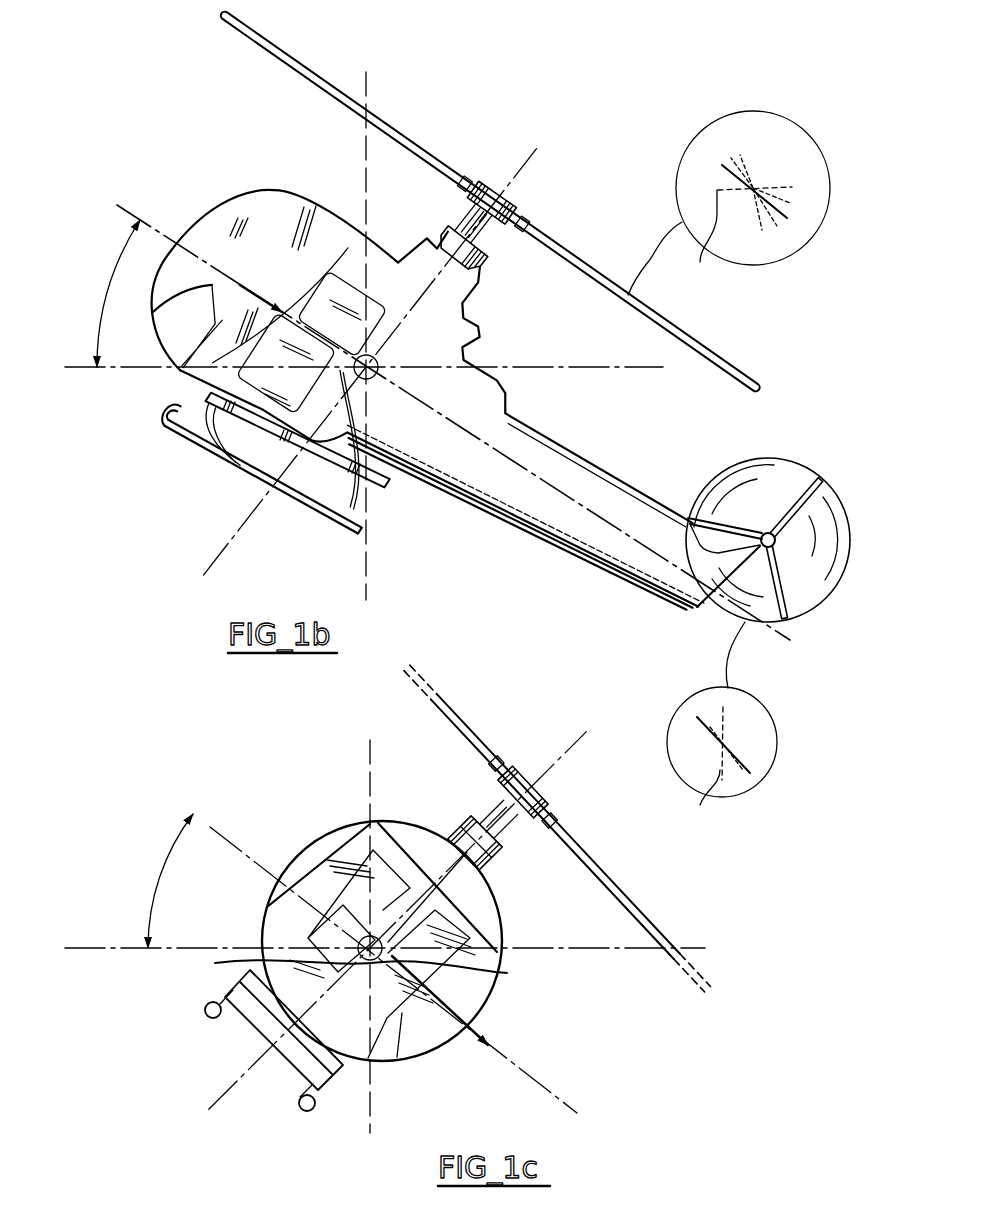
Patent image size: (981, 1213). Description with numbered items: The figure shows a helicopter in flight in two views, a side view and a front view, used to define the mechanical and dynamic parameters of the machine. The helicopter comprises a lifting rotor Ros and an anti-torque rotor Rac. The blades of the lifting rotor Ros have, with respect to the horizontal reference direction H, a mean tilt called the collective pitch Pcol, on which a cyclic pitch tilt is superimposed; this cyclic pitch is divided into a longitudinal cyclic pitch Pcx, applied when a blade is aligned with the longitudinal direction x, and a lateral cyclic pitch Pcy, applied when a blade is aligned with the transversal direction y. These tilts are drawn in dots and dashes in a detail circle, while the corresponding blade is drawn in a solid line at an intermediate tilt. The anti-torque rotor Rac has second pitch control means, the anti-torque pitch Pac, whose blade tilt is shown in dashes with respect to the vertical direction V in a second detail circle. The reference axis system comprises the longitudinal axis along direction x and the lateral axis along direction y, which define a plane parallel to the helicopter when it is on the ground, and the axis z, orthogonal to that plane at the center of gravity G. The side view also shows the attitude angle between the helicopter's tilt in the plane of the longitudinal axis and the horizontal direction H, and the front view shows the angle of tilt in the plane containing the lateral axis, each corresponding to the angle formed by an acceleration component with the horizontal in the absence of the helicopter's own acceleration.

In FIG. 1B, the vertical direction V is at (368, 90).
In FIG. 1C, the vertical direction V is at (372, 758).
In FIG. 1B, the horizontal direction H is at (80, 368).
In FIG. 1C, the horizontal direction H is at (92, 950).
In FIG. 1B, the longitudinal direction x is at (118, 207).
In FIG. 1C, the longitudinal direction x is at (350, 970).
In FIG. 1B, the transversal direction y is at (252, 473).
In FIG. 1C, the transversal direction y is at (199, 817).
In FIG. 1B, the axis zz z is at (538, 152).
In FIG. 1C, the axis zz z is at (586, 732).
In FIG. 1B, the center of gravity G is at (463, 342).
In FIG. 1C, the center of gravity G is at (445, 961).
In FIG. 1B, the lifting rotor Ros is at (518, 212).
In FIG. 1C, the lifting rotor Ros is at (540, 803).
In FIG. 1B, the anti-torque rotor Rac is at (750, 486).
In FIG. 1B, the collective pitch Pcol is at (738, 162).
In FIG. 1B, the lateral cyclic pitch Pcy is at (718, 190).
In FIG. 1B, the longitudinal cyclic pitch Pcx is at (748, 163).
In FIG. 1B, the anti-torque pitch Pac is at (712, 718).